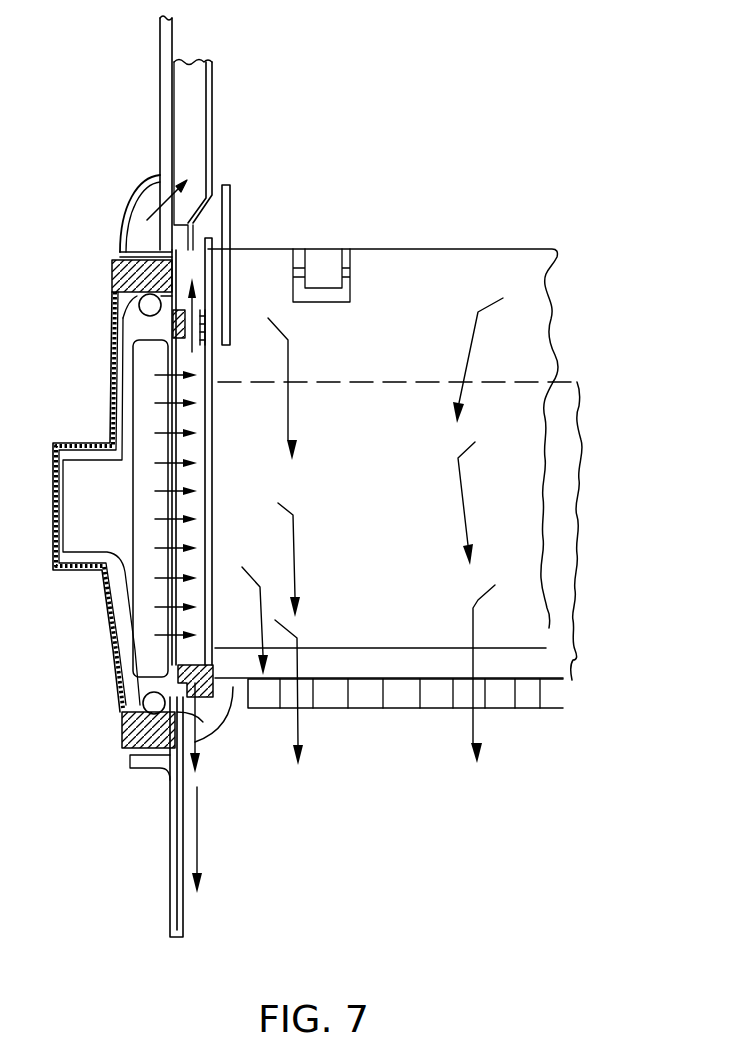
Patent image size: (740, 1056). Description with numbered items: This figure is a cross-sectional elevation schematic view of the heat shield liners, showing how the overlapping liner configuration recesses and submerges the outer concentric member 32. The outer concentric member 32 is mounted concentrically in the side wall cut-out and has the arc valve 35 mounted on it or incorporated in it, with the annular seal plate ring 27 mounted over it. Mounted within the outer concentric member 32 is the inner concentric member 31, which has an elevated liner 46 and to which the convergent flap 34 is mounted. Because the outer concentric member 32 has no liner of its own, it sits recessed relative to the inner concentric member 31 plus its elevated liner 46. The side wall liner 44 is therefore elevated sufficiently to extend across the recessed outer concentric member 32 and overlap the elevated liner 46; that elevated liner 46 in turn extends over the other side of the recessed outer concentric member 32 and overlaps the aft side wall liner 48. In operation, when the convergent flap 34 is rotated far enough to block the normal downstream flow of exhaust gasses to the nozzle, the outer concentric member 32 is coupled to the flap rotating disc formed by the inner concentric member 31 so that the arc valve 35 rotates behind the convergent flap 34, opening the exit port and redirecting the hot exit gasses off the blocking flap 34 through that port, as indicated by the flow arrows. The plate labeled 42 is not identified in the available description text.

The annular seal plate ring 27 is at (207, 725).
The inner concentric member 31 is at (163, 477).
The outer concentric member 32 is at (122, 256).
The convergent flap 34 is at (483, 280).
The arc valve 35 is at (367, 700).
The divider plate 42 is at (160, 100).
The side wall liner 44 is at (230, 218).
The elevated liner 46 is at (210, 491).
The aft side wall liner 48 is at (215, 127).